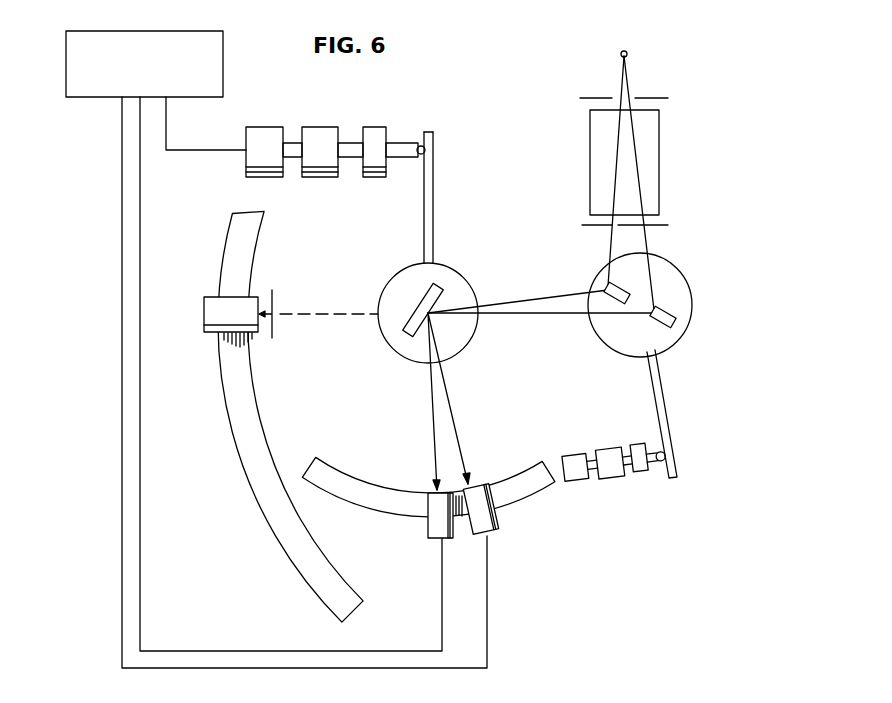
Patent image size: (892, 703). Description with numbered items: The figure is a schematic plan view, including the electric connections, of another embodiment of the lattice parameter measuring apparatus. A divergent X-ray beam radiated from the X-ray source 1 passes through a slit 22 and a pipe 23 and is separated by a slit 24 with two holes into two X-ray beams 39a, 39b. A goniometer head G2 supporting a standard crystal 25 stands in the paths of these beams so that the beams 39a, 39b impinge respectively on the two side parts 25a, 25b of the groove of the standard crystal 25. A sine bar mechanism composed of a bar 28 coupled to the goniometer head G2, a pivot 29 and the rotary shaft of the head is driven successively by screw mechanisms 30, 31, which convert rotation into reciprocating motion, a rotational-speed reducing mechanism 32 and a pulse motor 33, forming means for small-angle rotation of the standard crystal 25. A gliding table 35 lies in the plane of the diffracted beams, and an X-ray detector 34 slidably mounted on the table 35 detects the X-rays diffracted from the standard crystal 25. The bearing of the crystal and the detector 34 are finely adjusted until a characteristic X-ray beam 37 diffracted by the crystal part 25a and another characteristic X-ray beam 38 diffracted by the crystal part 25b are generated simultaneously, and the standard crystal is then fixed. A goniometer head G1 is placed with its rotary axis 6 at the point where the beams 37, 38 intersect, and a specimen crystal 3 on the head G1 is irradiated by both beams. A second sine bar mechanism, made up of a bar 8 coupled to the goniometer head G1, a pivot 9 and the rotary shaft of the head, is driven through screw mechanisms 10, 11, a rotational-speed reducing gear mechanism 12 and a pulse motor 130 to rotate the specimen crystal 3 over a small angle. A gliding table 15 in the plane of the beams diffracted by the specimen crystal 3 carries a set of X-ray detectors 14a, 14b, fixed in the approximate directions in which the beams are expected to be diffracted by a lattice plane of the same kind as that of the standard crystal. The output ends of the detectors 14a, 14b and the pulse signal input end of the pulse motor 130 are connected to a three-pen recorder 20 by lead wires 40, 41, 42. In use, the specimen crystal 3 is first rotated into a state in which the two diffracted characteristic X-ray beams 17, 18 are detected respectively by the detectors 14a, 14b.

The X-ray source 1 is at (628, 54).
The specimen crystal 3 is at (440, 284).
The rotary axis 6 is at (432, 316).
The bar 8 is at (424, 212).
The pivot 9 is at (433, 135).
The screw mechanism 10 is at (401, 143).
The screw mechanism 11 is at (371, 127).
The rotational-speed reducing gear mechanism 12 is at (318, 127).
The pulse motor 130 is at (259, 127).
The X-ray detector 14a is at (484, 487).
The X-ray detector 14b is at (428, 495).
The gliding table 15 is at (327, 467).
The diffracted characteristic X-ray beam 17 is at (452, 413).
The diffracted characteristic X-ray beam 18 is at (432, 402).
The three-pen recorder 20 is at (96, 30).
The slit 22 is at (655, 98).
The pipe 23 is at (660, 126).
The slit with two holes 24 is at (668, 225).
The standard crystal 25 is at (697, 295).
The side part of the groove 25a is at (678, 313).
The side part of the groove 25b is at (630, 287).
The bar 28 is at (673, 418).
The pivot 29 is at (658, 452).
The screw mechanism 30 is at (652, 474).
The screw mechanism 31 is at (637, 475).
The rotational-speed reducing mechanism 32 is at (611, 448).
The pulse motor 33 is at (578, 482).
The X-ray detector 34 is at (214, 297).
The gliding table 35 is at (262, 250).
The characteristic X-ray beam 37 is at (565, 315).
The characteristic X-ray beam 38 is at (538, 297).
The X-ray beam 39a is at (649, 238).
The X-ray beam 39b is at (612, 238).
The lead wire 40 is at (122, 169).
The lead wire 41 is at (141, 200).
The lead wire 42 is at (239, 152).
The goniometer head G1 is at (433, 303).
The goniometer head G2 is at (673, 338).